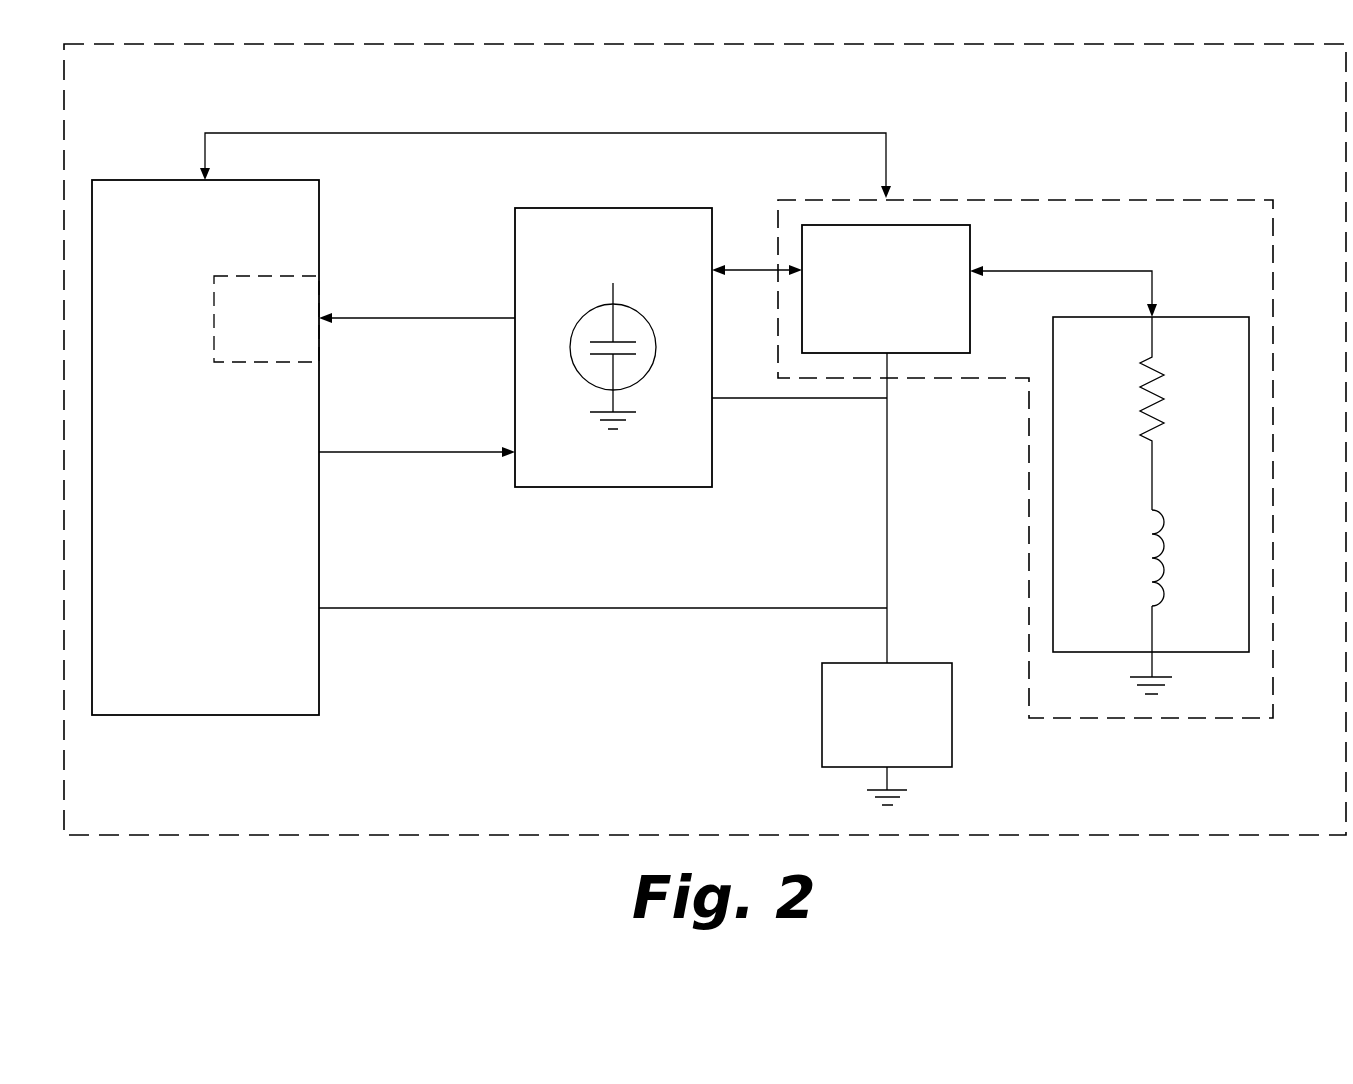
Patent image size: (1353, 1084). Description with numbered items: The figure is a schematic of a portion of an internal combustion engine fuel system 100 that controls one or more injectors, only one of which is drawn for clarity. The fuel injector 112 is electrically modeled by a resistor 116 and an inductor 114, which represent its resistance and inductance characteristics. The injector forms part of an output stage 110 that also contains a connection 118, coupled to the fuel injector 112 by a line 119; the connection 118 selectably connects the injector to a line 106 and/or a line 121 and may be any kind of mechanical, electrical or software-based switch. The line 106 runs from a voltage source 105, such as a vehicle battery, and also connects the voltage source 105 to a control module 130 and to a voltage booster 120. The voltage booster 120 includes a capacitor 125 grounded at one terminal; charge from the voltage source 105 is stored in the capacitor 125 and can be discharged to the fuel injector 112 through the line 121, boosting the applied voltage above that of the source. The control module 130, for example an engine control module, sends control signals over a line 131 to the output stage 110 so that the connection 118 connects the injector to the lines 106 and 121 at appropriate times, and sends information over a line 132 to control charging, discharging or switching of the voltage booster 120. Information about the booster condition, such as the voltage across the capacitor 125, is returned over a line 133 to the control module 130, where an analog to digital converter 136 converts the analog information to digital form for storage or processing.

The internal combustion engine fuel system 100 is at (262, 890).
The voltage source 105 is at (822, 727).
The line 106 is at (887, 535).
The output stage 110 is at (1210, 200).
The fuel injector 112 is at (1249, 537).
The inductor 114 is at (1165, 550).
The resistor 116 is at (1160, 385).
The connection 118 is at (925, 225).
The line 119 is at (1048, 270).
The voltage booster 120 is at (515, 262).
The line 121 is at (735, 268).
The capacitor 125 is at (571, 328).
The control module 130 is at (178, 717).
The line 131 is at (385, 132).
The line 132 is at (390, 455).
The line 133 is at (375, 320).
The analog to digital converter 136 is at (214, 315).